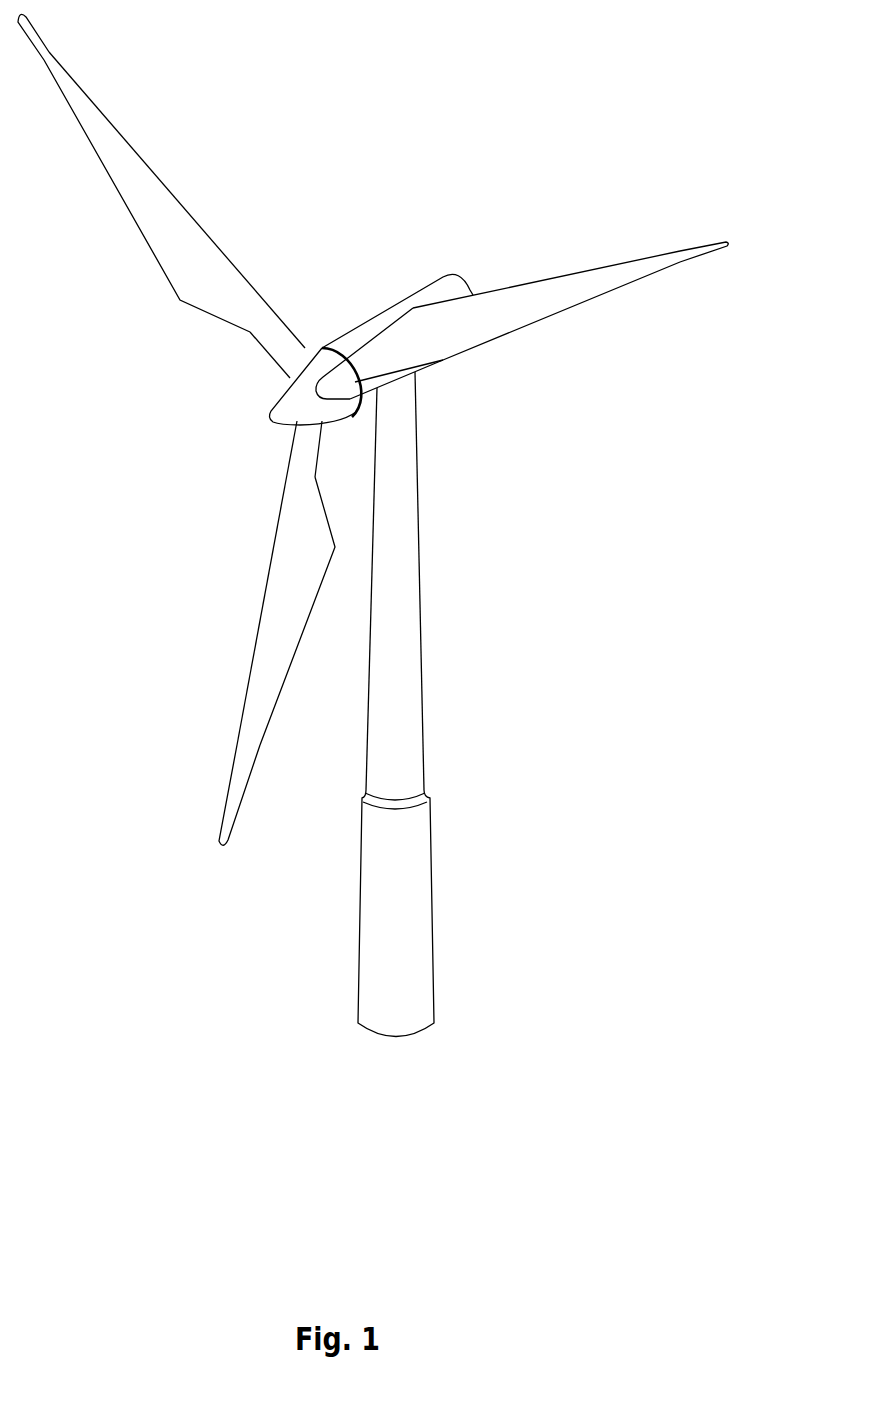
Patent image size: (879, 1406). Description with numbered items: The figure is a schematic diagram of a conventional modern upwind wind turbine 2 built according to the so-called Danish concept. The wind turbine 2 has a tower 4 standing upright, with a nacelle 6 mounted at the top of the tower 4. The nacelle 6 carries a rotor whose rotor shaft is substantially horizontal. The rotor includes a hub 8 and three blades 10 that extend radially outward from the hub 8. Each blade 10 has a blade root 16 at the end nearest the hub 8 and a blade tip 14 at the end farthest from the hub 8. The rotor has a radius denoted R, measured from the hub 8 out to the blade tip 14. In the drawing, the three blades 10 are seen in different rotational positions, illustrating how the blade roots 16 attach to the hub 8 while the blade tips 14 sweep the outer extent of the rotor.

The wind turbine 2 is at (502, 653).
The tower 4 is at (412, 585).
The nacelle 6 is at (352, 330).
The hub 8 is at (285, 403).
The blade 10 is at (192, 273).
The blade tip 14 is at (55, 65).
The blade root 16 is at (293, 363).